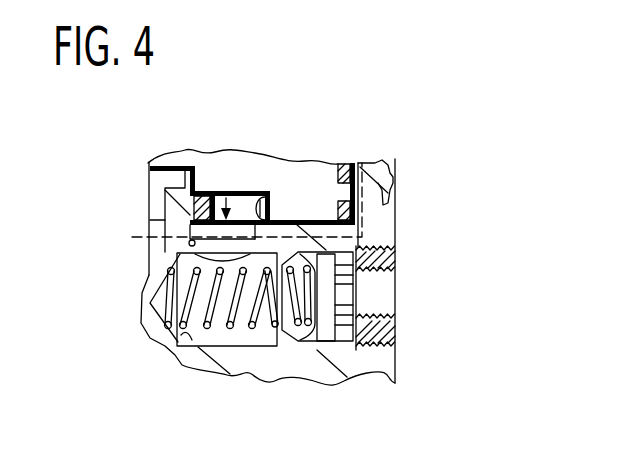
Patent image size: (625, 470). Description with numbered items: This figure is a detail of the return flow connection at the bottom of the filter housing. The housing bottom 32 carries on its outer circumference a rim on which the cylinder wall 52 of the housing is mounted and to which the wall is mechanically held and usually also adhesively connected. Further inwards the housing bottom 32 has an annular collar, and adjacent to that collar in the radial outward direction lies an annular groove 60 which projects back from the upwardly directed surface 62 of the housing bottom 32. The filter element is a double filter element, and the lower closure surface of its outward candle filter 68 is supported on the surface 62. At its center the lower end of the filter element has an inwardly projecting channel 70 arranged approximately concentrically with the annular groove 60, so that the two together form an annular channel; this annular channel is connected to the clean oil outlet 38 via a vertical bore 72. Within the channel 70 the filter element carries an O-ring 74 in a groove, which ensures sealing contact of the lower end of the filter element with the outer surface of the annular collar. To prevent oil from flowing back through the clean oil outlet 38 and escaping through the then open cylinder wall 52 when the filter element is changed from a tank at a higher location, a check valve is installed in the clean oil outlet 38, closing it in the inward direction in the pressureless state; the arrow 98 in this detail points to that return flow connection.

The housing bottom 32 is at (149, 230).
The clean oil outlet 38 is at (182, 365).
The cylinder wall 52 is at (394, 182).
The annular groove 60 is at (228, 190).
The upwardly directed surface 62 is at (250, 198).
The outward candle filter 68 is at (346, 164).
The channel 70 is at (266, 194).
The vertical bore 72 is at (190, 239).
The O-ring 74 is at (205, 192).
The threaded plug 98 is at (376, 293).